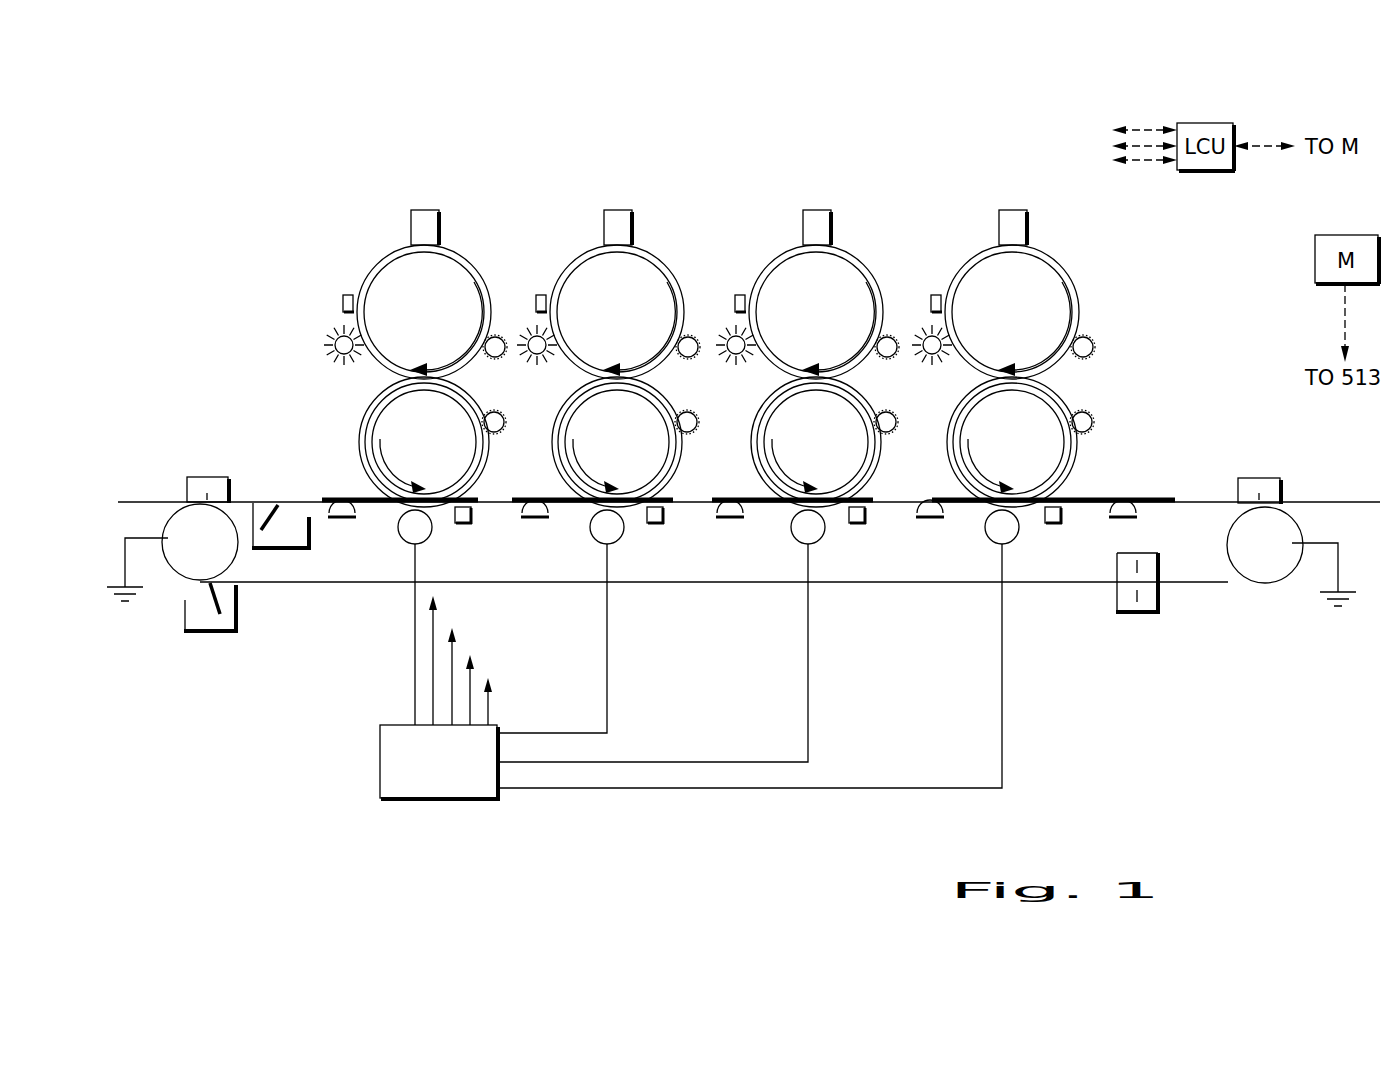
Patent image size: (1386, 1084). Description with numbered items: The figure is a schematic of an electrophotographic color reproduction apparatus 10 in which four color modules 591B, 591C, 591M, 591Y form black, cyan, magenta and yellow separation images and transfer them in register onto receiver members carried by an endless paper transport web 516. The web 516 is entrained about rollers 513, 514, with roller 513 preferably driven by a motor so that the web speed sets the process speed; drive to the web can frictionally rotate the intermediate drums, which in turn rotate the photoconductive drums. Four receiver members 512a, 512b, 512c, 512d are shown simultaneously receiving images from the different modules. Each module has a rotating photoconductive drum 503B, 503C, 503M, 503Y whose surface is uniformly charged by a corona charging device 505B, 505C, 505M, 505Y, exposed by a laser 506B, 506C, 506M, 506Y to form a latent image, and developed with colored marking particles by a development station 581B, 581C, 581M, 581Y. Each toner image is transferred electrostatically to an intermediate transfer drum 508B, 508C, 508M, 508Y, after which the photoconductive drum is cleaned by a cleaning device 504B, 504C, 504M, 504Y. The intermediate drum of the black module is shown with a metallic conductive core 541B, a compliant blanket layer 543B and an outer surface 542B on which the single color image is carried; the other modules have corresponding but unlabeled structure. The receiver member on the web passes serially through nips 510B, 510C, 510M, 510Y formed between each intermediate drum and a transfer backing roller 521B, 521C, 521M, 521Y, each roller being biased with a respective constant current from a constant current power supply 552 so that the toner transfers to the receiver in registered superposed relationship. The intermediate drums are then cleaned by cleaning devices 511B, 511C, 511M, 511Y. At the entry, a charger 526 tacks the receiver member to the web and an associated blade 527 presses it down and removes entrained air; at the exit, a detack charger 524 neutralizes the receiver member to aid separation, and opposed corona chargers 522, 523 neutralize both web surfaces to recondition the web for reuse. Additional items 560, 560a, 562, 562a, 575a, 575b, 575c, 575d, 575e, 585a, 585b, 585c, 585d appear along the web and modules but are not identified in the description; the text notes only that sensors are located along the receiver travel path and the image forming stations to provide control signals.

The reproduction apparatus 10 is at (925, 110).
The primary image-forming member drum 503B is at (424, 312).
The primary image-forming member drum 503C is at (617, 312).
The primary image-forming member drum 503M is at (816, 312).
The primary image-forming member drum 503Y is at (1012, 312).
The cleaning device 504B is at (328, 339).
The cleaning device 504C is at (533, 330).
The cleaning device 504M is at (732, 330).
The cleaning device 504Y is at (928, 330).
The corona charging device 505B is at (343, 300).
The corona charging device 505C is at (541, 295).
The corona charging device 505M is at (740, 295).
The corona charging device 505Y is at (936, 295).
The laser 506B is at (424, 210).
The laser 506C is at (617, 210).
The laser 506M is at (816, 210).
The laser 506Y is at (1012, 210).
The intermediate transfer drum 508B is at (379, 434).
The intermediate transfer drum 508C is at (617, 442).
The intermediate transfer drum 508M is at (816, 442).
The intermediate transfer drum 508Y is at (1012, 442).
The nip 510B is at (360, 491).
The nip 510C is at (552, 492).
The nip 510M is at (752, 482).
The nip 510Y is at (1075, 482).
The cleaning device 511B is at (496, 410).
The cleaning device 511C is at (689, 410).
The cleaning device 511M is at (888, 410).
The cleaning device 511Y is at (1084, 410).
The receiver member 512a is at (270, 470).
The receiver member 512b is at (471, 563).
The receiver member 512c is at (876, 483).
The receiver member 512d is at (1182, 485).
The roller 513 is at (1296, 537).
The roller 514 is at (168, 535).
The paper transport web 516 is at (486, 500).
The transfer backing roller 521B is at (413, 532).
The transfer backing roller 521C is at (605, 540).
The transfer backing roller 521M is at (802, 538).
The transfer backing roller 521Y is at (995, 535).
The corona charger 522 is at (1116, 597).
The corona charger 523 is at (1160, 574).
The detack charger 524 is at (1262, 477).
The charger 526 is at (207, 476).
The blade 527 is at (172, 468).
The conductive core 541B is at (365, 443).
The surface 542B is at (368, 410).
The compliant blanket layer 543B is at (375, 397).
The constant current power supply 552 is at (440, 799).
The cleaning station 560 is at (203, 625).
The cleaning blade 560a is at (218, 618).
The cleaning station 562 is at (317, 557).
The cleaning blade 562a is at (283, 516).
The sensor 575a is at (340, 519).
The sensor 575b is at (535, 520).
The sensor 575c is at (730, 520).
The sensor 575d is at (930, 520).
The sensor 575e is at (1122, 520).
The development station 581B is at (497, 360).
The development station 581C is at (690, 360).
The development station 581M is at (889, 360).
The development station 581Y is at (1085, 360).
The sensor 585a is at (482, 542).
The sensor 585b is at (663, 523).
The sensor 585c is at (857, 523).
The sensor 585d is at (1052, 524).
The color module 591B is at (373, 222).
The color module 591C is at (566, 222).
The color module 591M is at (765, 222).
The color module 591Y is at (961, 222).